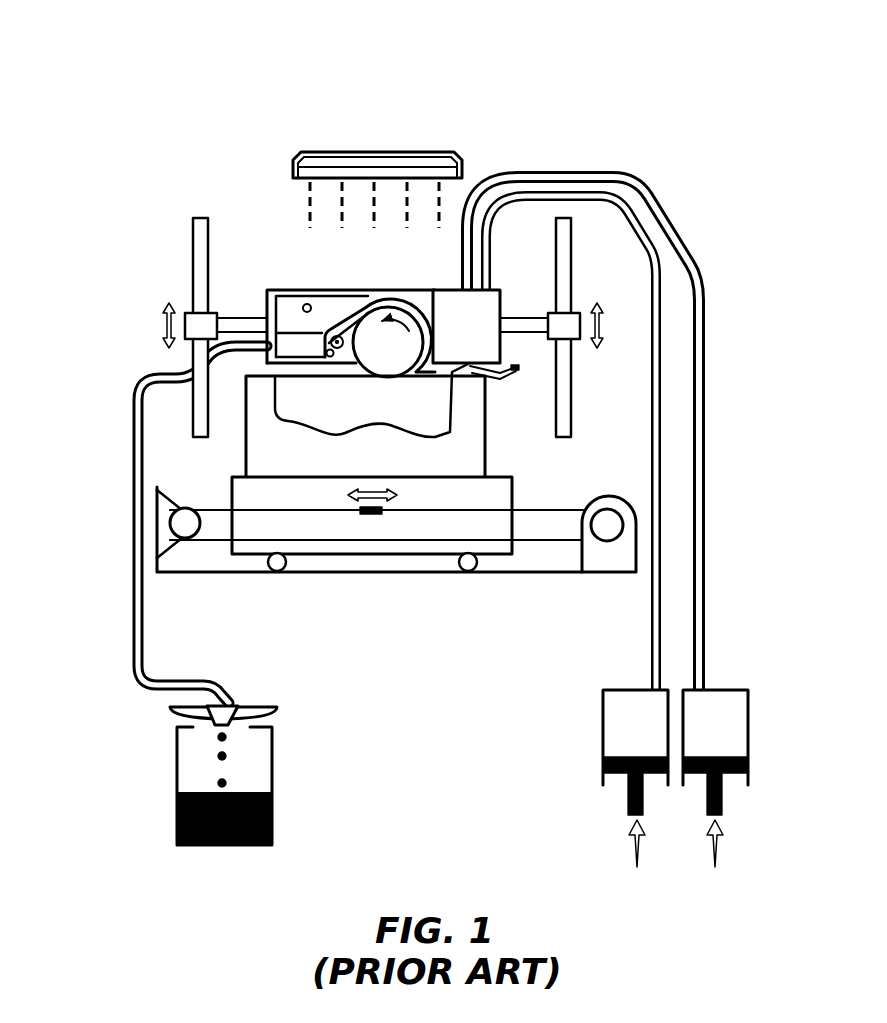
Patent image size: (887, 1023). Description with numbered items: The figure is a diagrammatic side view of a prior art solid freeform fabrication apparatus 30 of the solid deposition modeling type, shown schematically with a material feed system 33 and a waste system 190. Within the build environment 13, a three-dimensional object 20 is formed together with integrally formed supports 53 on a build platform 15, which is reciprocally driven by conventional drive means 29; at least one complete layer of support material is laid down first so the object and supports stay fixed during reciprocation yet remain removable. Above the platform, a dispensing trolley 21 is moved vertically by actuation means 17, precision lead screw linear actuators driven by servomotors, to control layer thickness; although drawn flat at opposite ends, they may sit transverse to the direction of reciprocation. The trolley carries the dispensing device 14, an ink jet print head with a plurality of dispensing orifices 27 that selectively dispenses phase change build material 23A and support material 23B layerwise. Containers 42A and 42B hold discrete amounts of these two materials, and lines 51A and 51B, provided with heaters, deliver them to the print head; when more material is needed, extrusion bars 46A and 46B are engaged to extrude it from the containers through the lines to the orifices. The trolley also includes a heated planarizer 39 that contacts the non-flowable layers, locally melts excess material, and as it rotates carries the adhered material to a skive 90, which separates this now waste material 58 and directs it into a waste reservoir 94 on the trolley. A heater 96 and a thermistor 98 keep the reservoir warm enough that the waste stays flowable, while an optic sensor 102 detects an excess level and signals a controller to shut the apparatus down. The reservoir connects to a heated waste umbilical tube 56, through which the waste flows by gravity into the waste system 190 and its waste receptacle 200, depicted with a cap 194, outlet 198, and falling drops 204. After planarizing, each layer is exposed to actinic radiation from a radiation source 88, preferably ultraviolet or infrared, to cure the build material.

The solid freeform fabrication apparatus 30 is at (187, 169).
The radiation source 88 is at (422, 170).
The actuation means 17 is at (194, 275).
The waste material 58 is at (267, 320).
The waste reservoir 94 is at (287, 343).
The optic sensor 102 is at (307, 303).
The thermistor 98 is at (330, 329).
The heater 96 is at (341, 320).
The skive 90 is at (383, 305).
The heated planarizer 39 is at (388, 342).
The dispensing trolley 21 is at (437, 289).
The build environment 13 is at (515, 292).
The line 51A is at (642, 268).
The line 51B is at (678, 267).
The dispensing device 14 is at (466, 326).
The three-dimensional object 20 is at (371, 400).
The supports 53 is at (365, 426).
The dispensing orifices 27 is at (525, 368).
The build platform 15 is at (382, 524).
The drive means 29 is at (609, 534).
The heated waste umbilical tube 56 is at (132, 632).
The waste system 190 is at (285, 638).
The funnel cap 194 is at (253, 703).
The funnel outlet 198 is at (220, 717).
The ink drops 204 is at (226, 757).
The waste receptacle 200 is at (272, 768).
The material feed system 33 is at (596, 662).
The container 42A is at (603, 738).
The container 42B is at (748, 738).
The build material 23A is at (635, 737).
The support material 23B is at (715, 737).
The extrusion bar 46A is at (628, 802).
The extrusion bar 46B is at (722, 802).